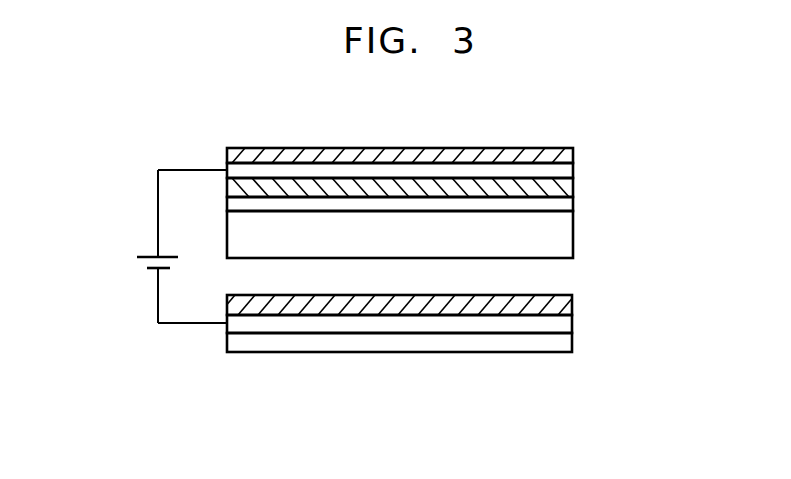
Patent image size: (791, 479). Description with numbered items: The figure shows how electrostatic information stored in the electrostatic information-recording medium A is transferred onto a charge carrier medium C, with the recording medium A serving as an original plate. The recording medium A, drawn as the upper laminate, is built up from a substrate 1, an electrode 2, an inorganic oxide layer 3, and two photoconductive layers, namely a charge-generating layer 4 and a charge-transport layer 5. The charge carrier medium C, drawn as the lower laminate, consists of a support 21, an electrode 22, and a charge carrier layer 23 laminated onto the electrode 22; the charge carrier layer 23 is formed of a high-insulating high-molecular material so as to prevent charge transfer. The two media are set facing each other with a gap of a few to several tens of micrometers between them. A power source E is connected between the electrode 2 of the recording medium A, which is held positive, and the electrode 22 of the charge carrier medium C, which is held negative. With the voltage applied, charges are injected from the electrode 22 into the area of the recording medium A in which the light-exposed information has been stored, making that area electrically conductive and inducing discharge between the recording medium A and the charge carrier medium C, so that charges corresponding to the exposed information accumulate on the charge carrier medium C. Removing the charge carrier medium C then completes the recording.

The substrate 1 is at (573, 157).
The electrode 2 is at (570, 172).
The inorganic oxide layer 3 is at (567, 187).
The charge-generating layer 4 is at (567, 204).
The charge-transport layer 5 is at (568, 235).
The support 21 is at (568, 343).
The electrode 22 is at (568, 325).
The charge carrier layer 23 is at (572, 305).
The electrostatic information-recording medium A is at (258, 136).
The charge carrier medium C is at (258, 360).
The power source E is at (134, 270).